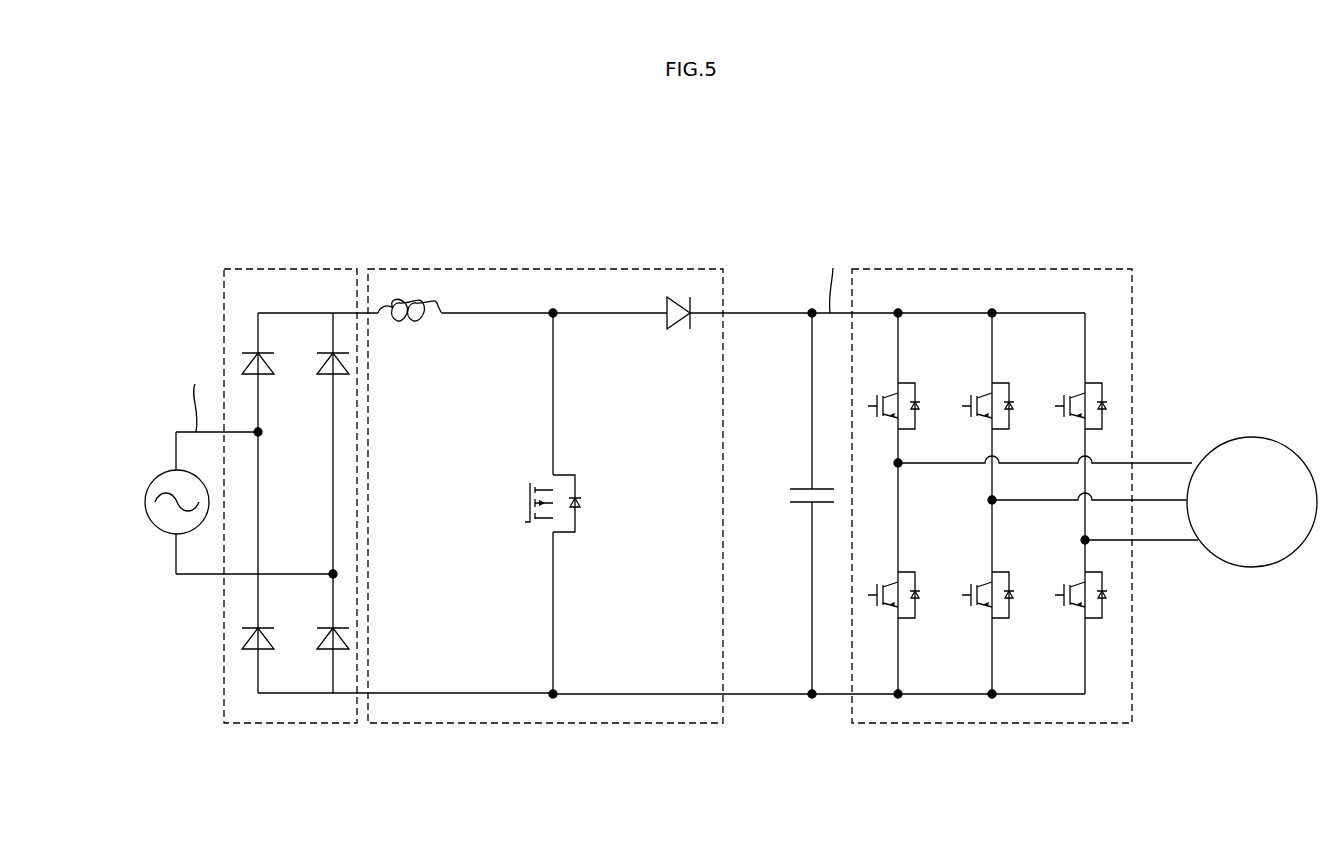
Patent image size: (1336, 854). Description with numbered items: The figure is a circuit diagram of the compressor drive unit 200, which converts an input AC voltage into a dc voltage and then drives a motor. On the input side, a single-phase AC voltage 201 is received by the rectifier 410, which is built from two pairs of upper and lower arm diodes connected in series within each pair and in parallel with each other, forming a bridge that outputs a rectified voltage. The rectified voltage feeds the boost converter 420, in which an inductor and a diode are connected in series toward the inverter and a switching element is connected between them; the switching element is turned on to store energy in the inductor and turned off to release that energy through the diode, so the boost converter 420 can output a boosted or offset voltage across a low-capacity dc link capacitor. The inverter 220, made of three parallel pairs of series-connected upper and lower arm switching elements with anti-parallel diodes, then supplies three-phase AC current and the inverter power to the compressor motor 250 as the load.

The compressor drive unit 200 is at (138, 168).
The single-phase AC voltage 201 is at (166, 534).
The rectifier 410 is at (330, 268).
The boost converter 420 is at (688, 268).
The inverter 220 is at (1097, 268).
The compressor motor 250 is at (1250, 437).